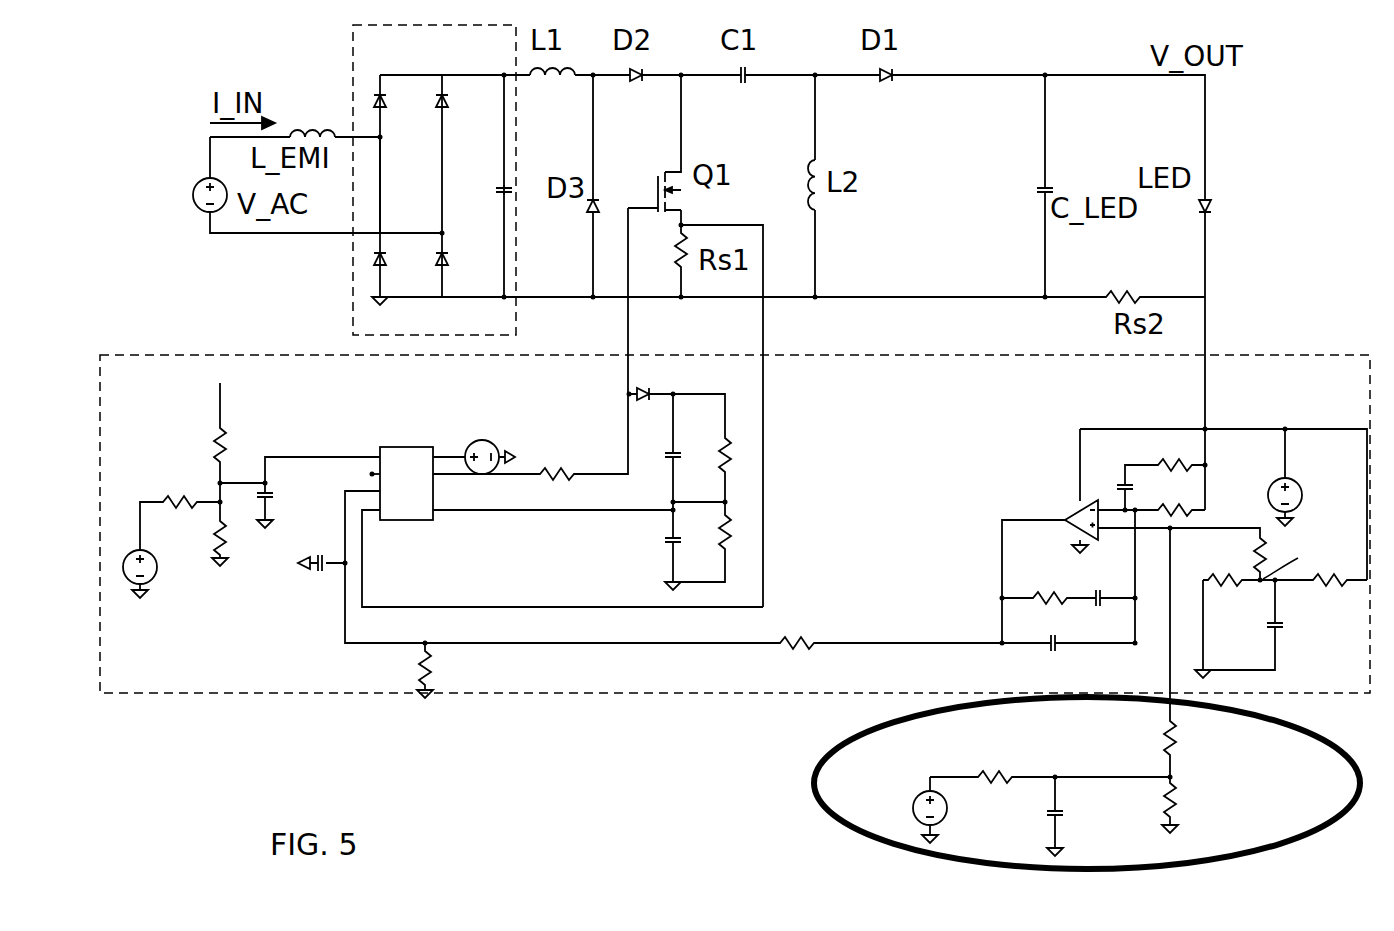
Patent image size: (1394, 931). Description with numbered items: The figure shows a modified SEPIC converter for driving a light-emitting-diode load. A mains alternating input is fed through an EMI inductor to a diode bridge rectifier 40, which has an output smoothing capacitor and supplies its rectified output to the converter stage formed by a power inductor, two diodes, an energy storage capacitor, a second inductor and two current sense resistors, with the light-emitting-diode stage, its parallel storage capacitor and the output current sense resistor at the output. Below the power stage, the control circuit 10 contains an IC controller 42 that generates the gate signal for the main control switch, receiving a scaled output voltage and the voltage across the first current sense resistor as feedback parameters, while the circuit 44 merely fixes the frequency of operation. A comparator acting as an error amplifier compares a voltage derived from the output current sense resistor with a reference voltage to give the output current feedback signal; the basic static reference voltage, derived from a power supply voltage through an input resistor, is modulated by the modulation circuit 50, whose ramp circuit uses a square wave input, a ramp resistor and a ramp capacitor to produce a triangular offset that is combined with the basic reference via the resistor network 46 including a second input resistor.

The control circuit 10 is at (562, 695).
The diode bridge rectifier 40 is at (352, 100).
The IC controller 42 is at (393, 446).
The circuit for fixing a frequency of operation 44 is at (745, 450).
The resistor network 46 is at (1198, 757).
The modulation circuit 50 is at (1032, 783).